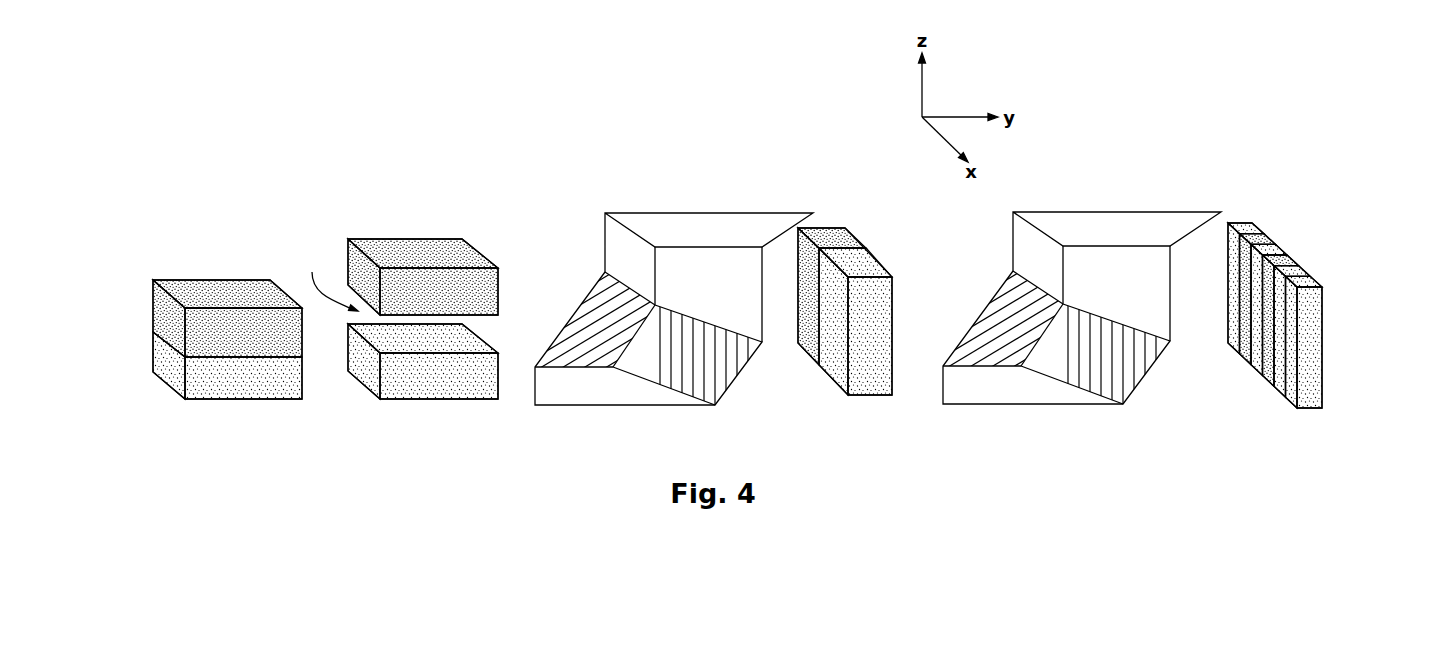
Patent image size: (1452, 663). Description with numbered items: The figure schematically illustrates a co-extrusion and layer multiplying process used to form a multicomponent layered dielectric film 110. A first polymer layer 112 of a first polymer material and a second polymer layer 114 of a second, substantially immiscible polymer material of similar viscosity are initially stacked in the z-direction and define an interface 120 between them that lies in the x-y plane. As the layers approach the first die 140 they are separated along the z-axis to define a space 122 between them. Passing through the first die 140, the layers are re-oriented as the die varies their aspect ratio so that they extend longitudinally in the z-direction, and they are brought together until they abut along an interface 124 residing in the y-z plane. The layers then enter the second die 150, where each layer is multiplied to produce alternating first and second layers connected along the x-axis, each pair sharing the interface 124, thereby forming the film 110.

The multicomponent layered dielectric film 110 is at (1360, 167).
The first polymer layer 112 is at (153, 300).
The second polymer layer 114 is at (153, 367).
The interface 120 is at (741, 281).
The space 122 is at (323, 278).
The interface 124 is at (856, 242).
The first die 140 is at (699, 203).
The second die 150 is at (1112, 200).